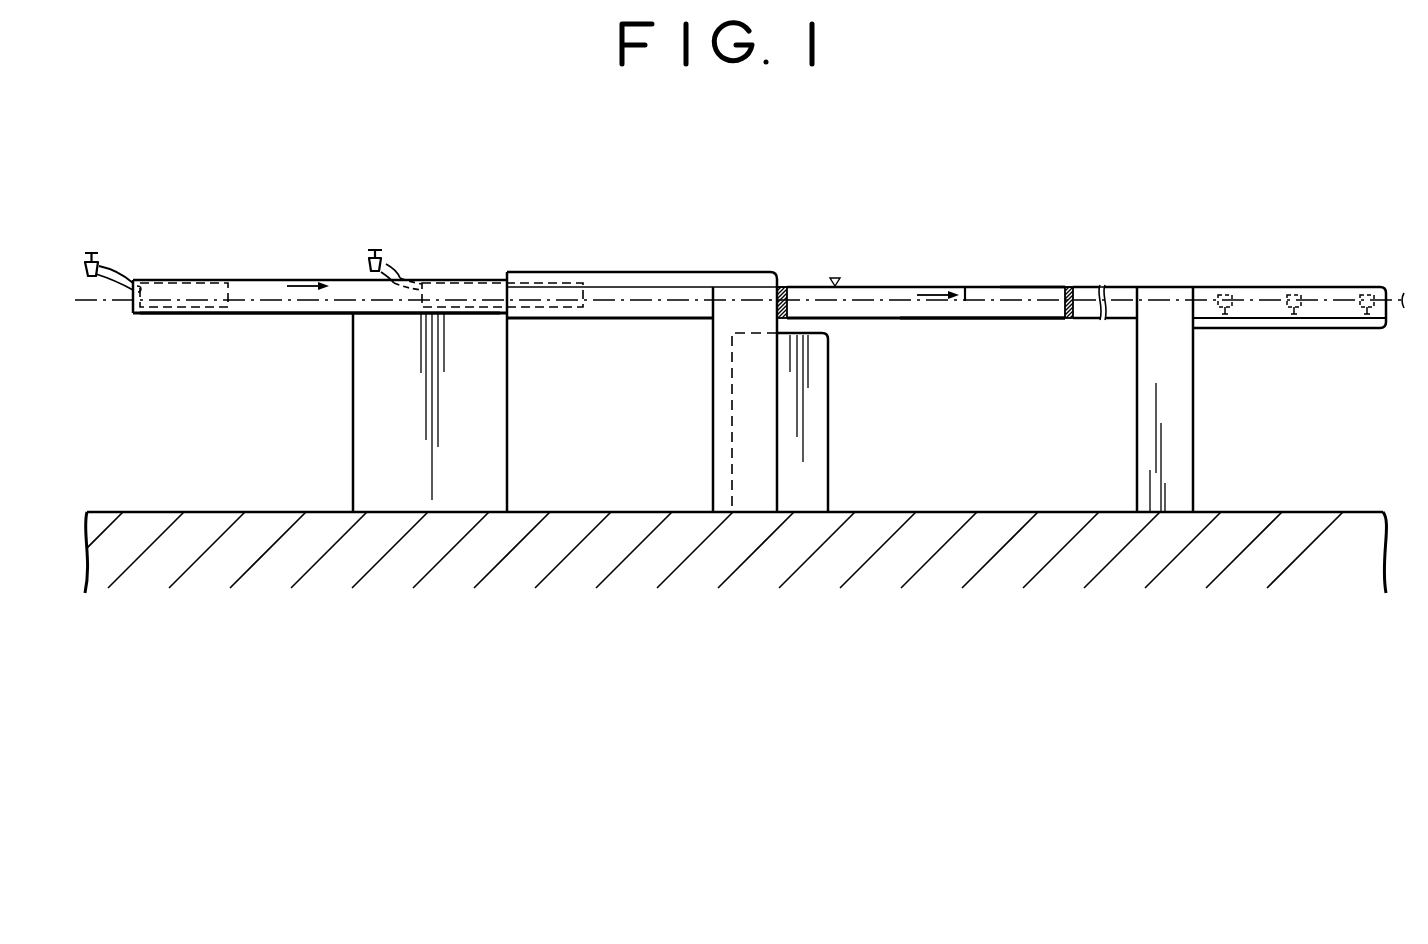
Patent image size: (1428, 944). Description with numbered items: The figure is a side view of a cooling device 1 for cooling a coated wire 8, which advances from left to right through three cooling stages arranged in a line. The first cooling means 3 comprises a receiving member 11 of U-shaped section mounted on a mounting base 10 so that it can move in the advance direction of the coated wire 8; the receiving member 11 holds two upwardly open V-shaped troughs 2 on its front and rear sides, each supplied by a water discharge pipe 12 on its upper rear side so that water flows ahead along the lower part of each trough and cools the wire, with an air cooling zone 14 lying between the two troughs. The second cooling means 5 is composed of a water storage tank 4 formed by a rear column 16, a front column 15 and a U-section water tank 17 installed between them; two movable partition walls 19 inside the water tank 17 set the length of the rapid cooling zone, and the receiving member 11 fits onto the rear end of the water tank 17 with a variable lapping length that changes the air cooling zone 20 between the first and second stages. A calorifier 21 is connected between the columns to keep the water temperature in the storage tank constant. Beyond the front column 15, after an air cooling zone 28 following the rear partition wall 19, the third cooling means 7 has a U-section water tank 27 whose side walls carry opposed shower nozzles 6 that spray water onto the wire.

The cooling device 1 is at (878, 243).
The V-shaped trough 2 is at (186, 290).
The first cooling means 3 is at (263, 316).
The water storage tank 4 is at (997, 319).
The second cooling means 5 is at (988, 280).
The shower nozzle 6 is at (1225, 292).
The third cooling means 7 is at (1340, 280).
The coated wire 8 is at (963, 283).
The mounting base 10 is at (365, 435).
The receiving member 11 is at (260, 279).
The water discharge pipe 12 is at (110, 283).
The air cooling zone 14 is at (337, 279).
The front column 15 is at (1182, 455).
The rear column 16 is at (718, 434).
The water tank 17 is at (1030, 287).
The partition wall 19 is at (787, 287).
The air cooling zone 20 is at (646, 290).
The calorifier 21 is at (823, 434).
The water tank 27 is at (1280, 287).
The air cooling zone 28 is at (1122, 287).